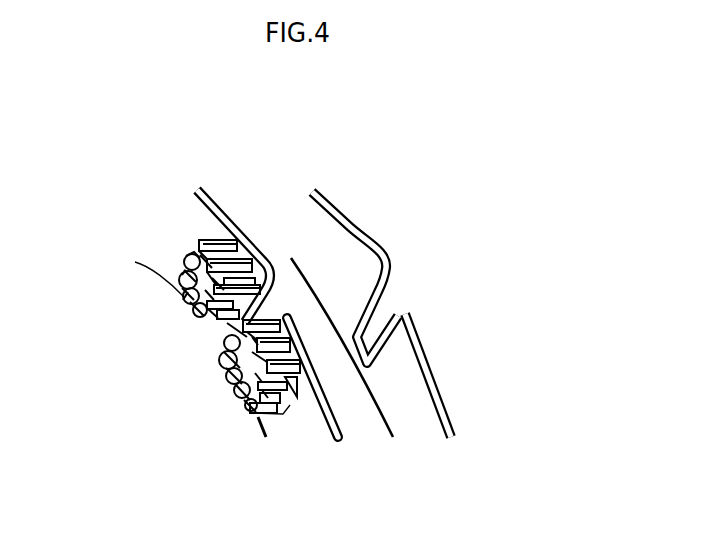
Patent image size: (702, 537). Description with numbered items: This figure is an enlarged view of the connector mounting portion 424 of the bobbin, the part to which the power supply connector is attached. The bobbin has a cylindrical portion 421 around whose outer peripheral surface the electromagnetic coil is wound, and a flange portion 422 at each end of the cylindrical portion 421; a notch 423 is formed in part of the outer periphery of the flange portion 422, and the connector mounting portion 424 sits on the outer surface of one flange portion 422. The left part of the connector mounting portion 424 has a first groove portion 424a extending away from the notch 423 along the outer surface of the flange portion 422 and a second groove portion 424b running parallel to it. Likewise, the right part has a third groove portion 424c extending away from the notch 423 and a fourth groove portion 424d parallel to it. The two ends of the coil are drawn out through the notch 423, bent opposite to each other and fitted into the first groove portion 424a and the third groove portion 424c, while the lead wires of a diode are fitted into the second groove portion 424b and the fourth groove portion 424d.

The cylindrical portion 421 is at (362, 408).
The flange portion 422 is at (220, 200).
The notch 423 is at (283, 293).
The connector mounting portion 424 is at (281, 379).
The first groove portion 424a is at (235, 322).
The second groove portion 424b is at (223, 343).
The third groove portion 424c is at (283, 414).
The fourth groove portion 424d is at (273, 466).